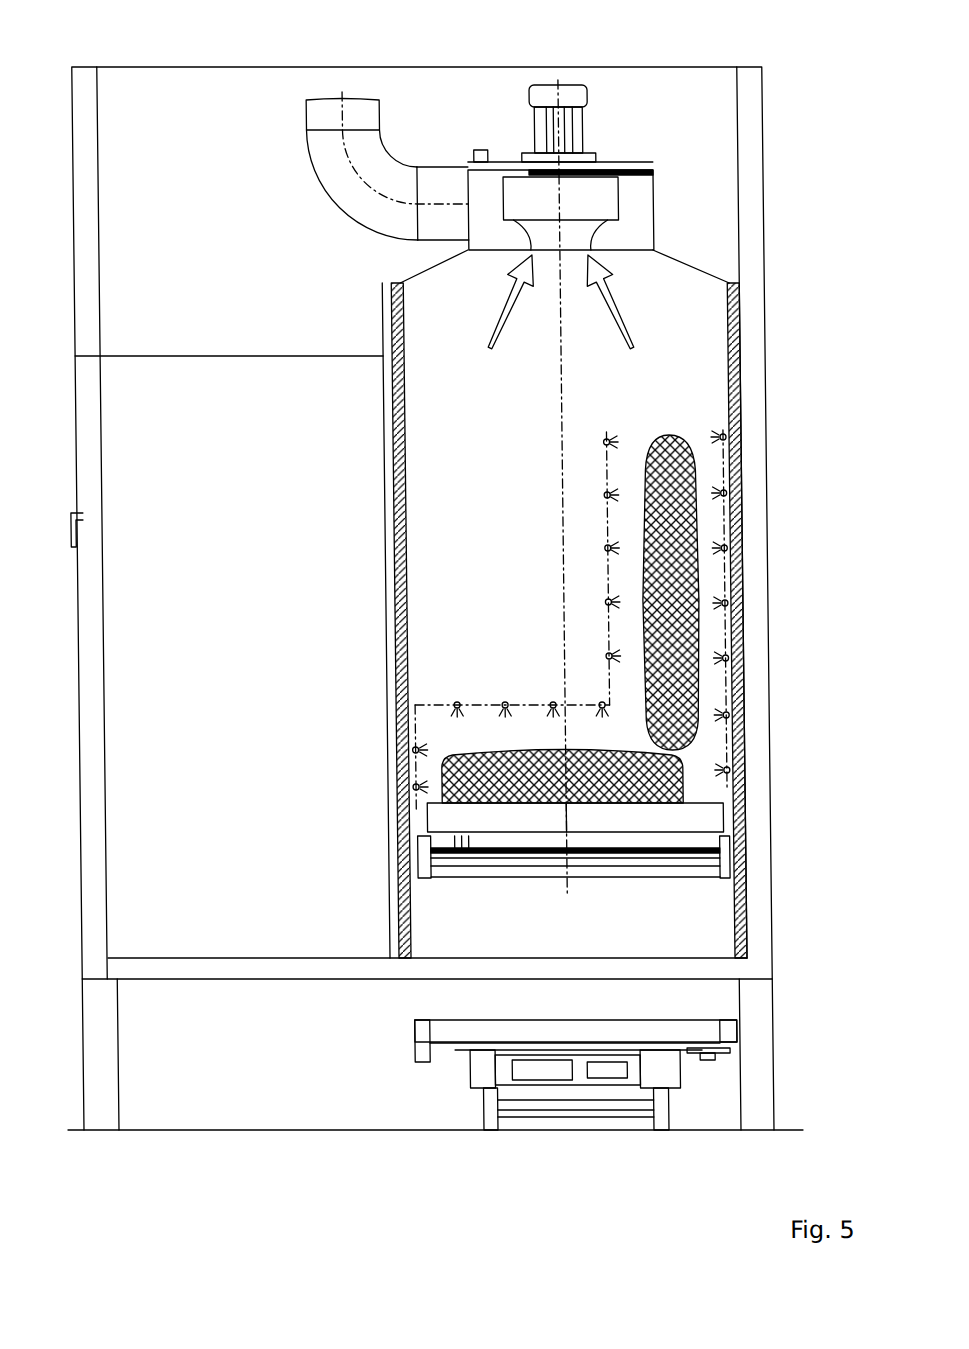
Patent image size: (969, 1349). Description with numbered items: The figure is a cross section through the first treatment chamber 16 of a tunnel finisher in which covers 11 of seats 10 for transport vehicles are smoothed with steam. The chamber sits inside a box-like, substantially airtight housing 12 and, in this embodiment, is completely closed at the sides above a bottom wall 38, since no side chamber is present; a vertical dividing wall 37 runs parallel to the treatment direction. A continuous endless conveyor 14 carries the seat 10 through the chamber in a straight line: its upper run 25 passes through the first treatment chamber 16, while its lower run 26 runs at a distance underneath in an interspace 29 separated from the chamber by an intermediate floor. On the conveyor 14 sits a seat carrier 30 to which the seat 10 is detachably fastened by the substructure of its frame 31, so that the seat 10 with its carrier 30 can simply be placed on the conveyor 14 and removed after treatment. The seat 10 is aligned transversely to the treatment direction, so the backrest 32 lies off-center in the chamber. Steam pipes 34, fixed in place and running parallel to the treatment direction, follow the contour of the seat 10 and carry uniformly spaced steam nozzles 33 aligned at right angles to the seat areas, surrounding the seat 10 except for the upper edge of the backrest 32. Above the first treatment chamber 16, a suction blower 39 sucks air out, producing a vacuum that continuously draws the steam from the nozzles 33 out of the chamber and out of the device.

The seat 10 is at (706, 745).
The cover 11 is at (690, 640).
The housing 12 is at (763, 352).
The conveyor 14 is at (680, 886).
The first treatment chamber 16 is at (699, 349).
The upper run 25 is at (697, 850).
The lower run 26 is at (445, 1045).
The interspace 29 is at (272, 1067).
The seat carrier 30 is at (690, 815).
The frame 31 is at (499, 805).
The backrest 32 is at (687, 520).
The steam nozzle 33 is at (716, 437).
The steam pipe 34 is at (738, 480).
The dividing wall 37 is at (497, 413).
The bottom wall 38 is at (164, 968).
The suction blower 39 is at (597, 185).